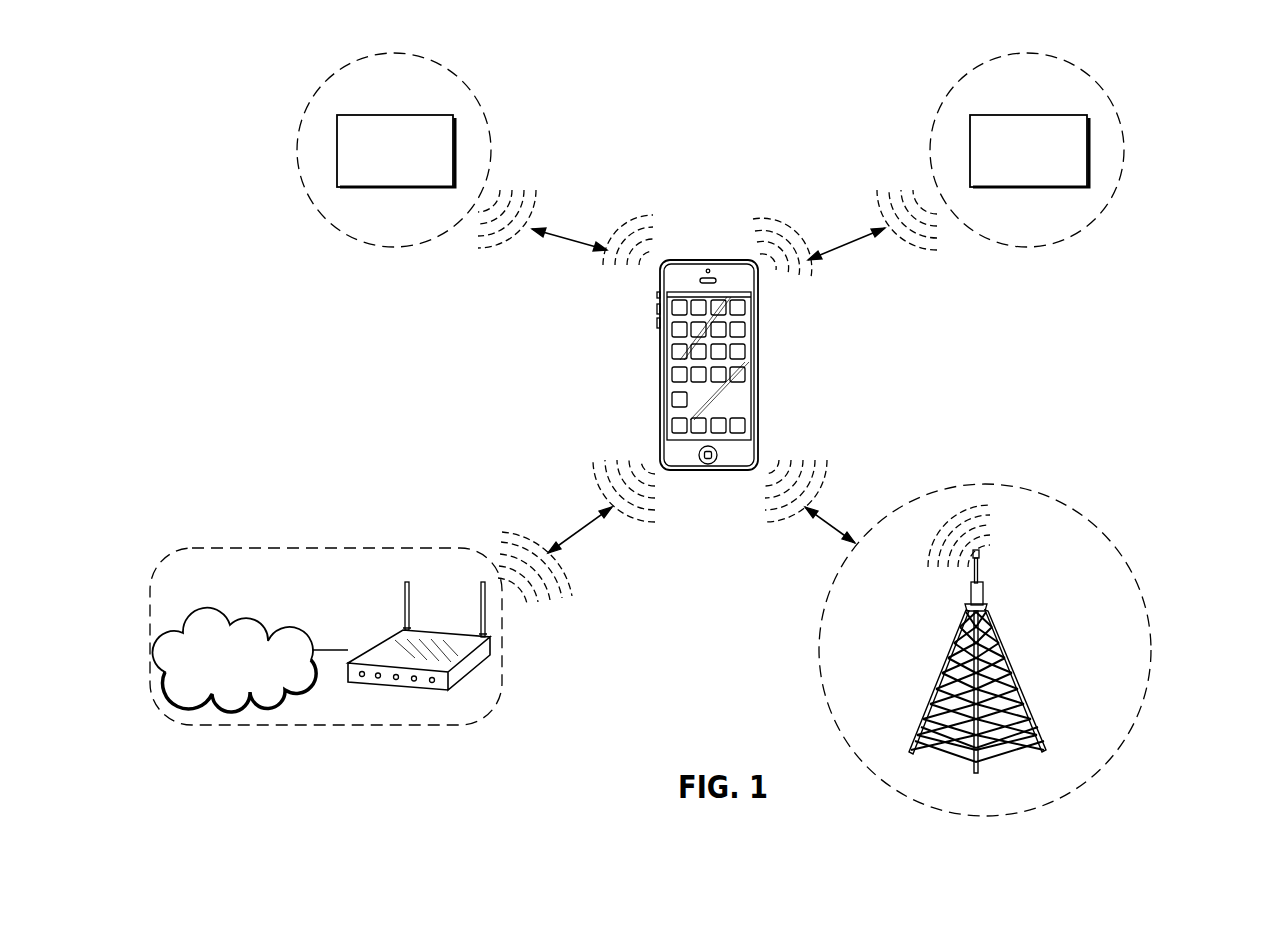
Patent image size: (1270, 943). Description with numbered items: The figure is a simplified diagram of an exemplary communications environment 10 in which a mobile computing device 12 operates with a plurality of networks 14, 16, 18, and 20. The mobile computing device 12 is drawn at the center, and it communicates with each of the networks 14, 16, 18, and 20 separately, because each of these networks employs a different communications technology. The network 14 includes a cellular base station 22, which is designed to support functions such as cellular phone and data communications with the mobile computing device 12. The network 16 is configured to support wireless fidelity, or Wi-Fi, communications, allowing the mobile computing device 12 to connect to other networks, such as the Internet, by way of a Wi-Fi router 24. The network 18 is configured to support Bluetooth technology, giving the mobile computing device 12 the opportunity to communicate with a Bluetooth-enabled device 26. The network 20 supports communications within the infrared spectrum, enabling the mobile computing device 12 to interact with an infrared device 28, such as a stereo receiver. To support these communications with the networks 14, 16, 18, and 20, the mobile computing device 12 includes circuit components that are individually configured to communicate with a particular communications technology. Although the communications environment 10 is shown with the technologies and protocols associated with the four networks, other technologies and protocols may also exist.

The communications environment 10 is at (1205, 80).
The mobile computing device 12 is at (757, 363).
The network 14 is at (1092, 530).
The network 16 is at (502, 645).
The network 18 is at (475, 95).
The network 20 is at (1120, 182).
The cellular base station 22 is at (989, 608).
The Wi-Fi router 24 is at (467, 665).
The Bluetooth-enabled device 26 is at (455, 143).
The infrared device 28 is at (1087, 130).